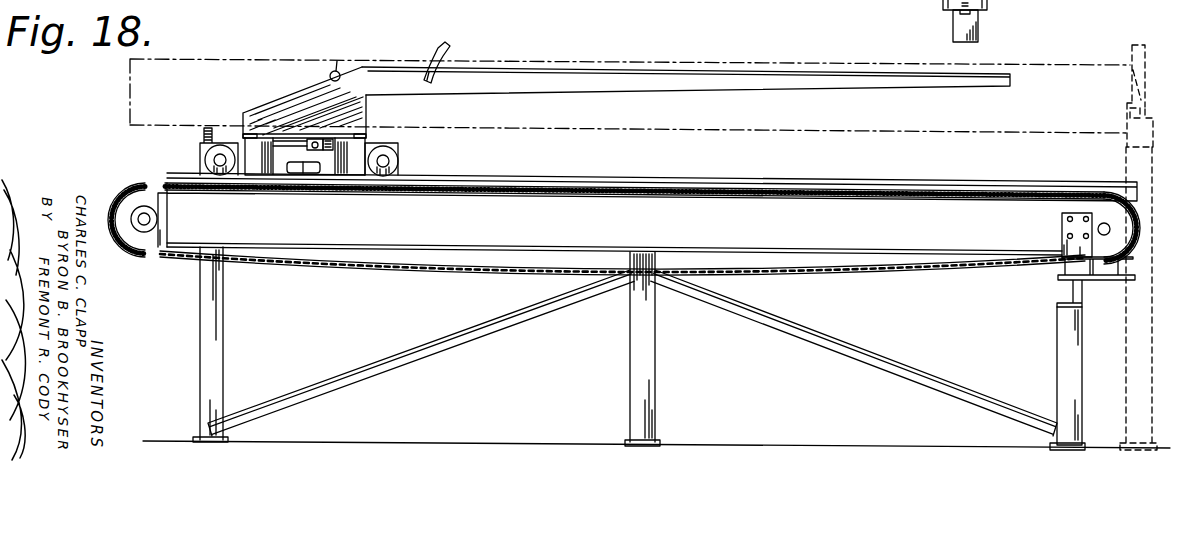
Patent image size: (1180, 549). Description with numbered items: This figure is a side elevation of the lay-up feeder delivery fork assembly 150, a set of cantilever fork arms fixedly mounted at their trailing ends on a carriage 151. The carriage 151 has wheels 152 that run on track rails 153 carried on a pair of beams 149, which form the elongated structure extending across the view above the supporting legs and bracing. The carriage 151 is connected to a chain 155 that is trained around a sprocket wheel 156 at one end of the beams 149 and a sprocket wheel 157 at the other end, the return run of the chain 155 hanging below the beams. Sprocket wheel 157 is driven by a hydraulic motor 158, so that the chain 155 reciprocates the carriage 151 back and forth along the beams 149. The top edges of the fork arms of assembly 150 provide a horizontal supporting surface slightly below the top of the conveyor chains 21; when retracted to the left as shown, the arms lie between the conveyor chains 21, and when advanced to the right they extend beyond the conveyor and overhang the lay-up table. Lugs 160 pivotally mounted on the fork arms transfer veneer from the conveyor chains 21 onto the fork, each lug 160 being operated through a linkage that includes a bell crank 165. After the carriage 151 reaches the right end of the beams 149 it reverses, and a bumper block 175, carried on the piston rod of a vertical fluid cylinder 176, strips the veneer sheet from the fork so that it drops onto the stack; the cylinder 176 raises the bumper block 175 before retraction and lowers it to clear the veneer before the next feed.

The chain belt conveyor 21 is at (244, 60).
The beams 149 is at (393, 240).
The lay-up feeder delivery fork assembly 150 is at (699, 82).
The carriage 151 is at (372, 96).
The wheels 152 is at (208, 158).
The track rails 153 is at (577, 178).
The chain 155 is at (150, 179).
The sprocket wheel 156 is at (169, 229).
The sprocket wheel 157 is at (1100, 206).
The hydraulic motor 158 is at (954, 25).
The lugs 160 is at (447, 47).
The bell crank 165 is at (339, 60).
The bumper block 175 is at (1131, 58).
The vertical fluid cylinder 176 is at (1127, 140).